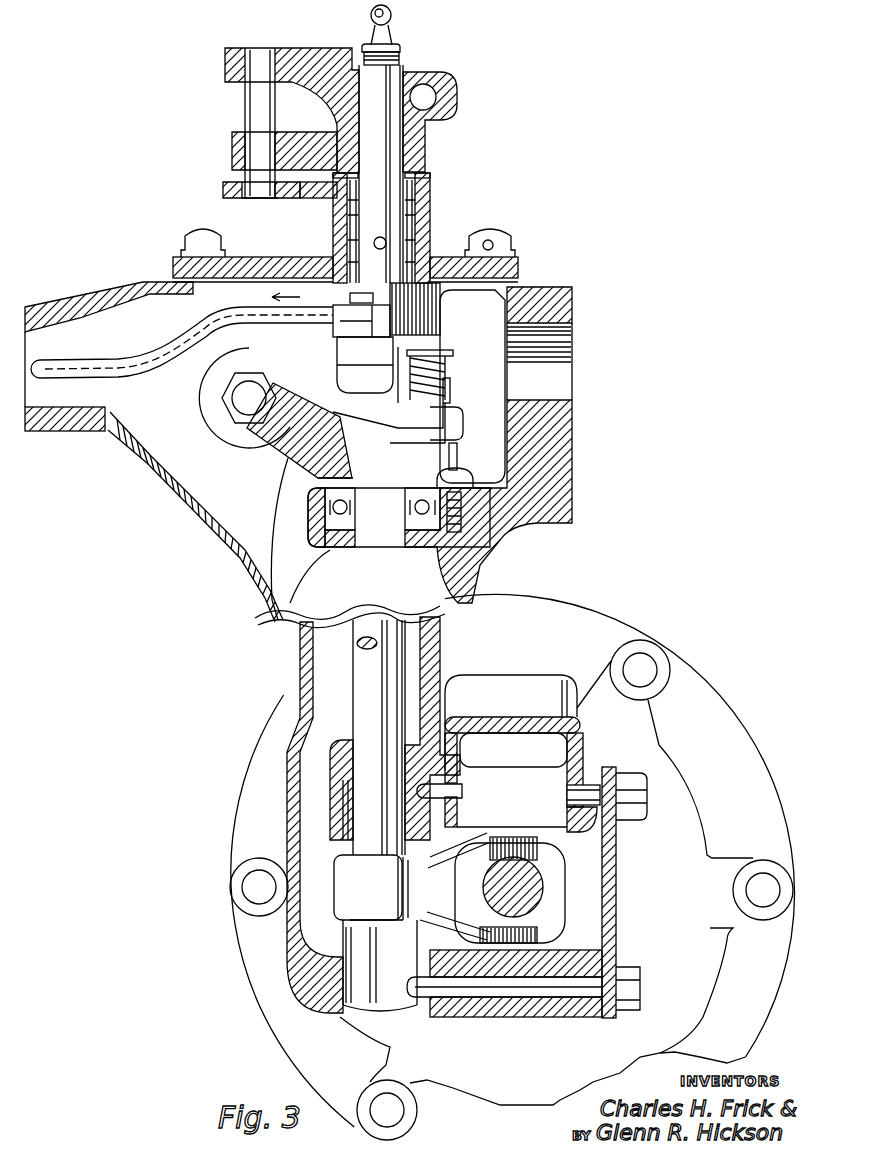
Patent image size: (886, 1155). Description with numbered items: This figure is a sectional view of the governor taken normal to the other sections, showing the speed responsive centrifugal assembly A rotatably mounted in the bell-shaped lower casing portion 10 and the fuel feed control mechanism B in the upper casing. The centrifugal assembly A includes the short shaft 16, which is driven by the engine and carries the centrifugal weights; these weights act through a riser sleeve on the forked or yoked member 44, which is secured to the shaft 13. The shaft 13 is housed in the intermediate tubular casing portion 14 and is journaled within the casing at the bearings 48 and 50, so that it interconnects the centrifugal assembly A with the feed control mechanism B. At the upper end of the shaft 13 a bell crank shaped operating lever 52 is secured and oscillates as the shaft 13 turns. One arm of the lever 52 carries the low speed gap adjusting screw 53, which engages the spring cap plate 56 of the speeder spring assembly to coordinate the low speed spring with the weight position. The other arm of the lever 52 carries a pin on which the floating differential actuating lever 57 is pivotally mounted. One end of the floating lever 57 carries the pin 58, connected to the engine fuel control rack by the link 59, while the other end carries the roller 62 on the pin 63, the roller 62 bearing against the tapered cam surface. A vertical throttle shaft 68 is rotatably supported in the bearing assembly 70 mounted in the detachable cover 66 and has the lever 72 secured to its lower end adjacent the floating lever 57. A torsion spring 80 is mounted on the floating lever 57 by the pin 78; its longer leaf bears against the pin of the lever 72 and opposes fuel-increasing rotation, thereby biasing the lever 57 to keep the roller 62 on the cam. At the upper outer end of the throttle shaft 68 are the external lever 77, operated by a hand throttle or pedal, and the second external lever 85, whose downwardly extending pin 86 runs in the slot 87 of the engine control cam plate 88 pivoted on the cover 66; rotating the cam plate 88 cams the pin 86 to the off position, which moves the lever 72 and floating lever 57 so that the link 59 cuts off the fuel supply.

The bell-shaped lower casing portion 10 is at (650, 752).
The shaft 13 is at (367, 677).
The intermediate tubular casing portion 14 is at (300, 667).
The short shaft 16 is at (490, 893).
The forked or yoked member 44 is at (480, 833).
The journal bearing 48 is at (340, 803).
The journal bearing 50 is at (320, 523).
The bell crank shaped operating lever 52 is at (290, 455).
The low speed gap adjusting screw 53 is at (240, 393).
The spring cap plate 56 is at (220, 427).
The floating differential actuating lever 57 is at (383, 403).
The pin 58 is at (357, 293).
The link 59 is at (177, 330).
The roller 62 is at (457, 460).
The pin 63 is at (450, 393).
The detachable cover 66 is at (180, 265).
The vertical throttle shaft 68 is at (398, 150).
The bearing assembly 70 is at (418, 217).
The lever 72 is at (427, 313).
The external lever 77 is at (302, 50).
The pin 78 is at (440, 380).
The torsion spring 80 is at (450, 355).
The second external lever 85 is at (240, 147).
The pin 86 is at (258, 132).
The slot 87 is at (308, 188).
The engine control cam plate 88 is at (225, 190).
The speed responsive centrifugal assembly A is at (586, 866).
The fuel feed control mechanism B is at (442, 336).